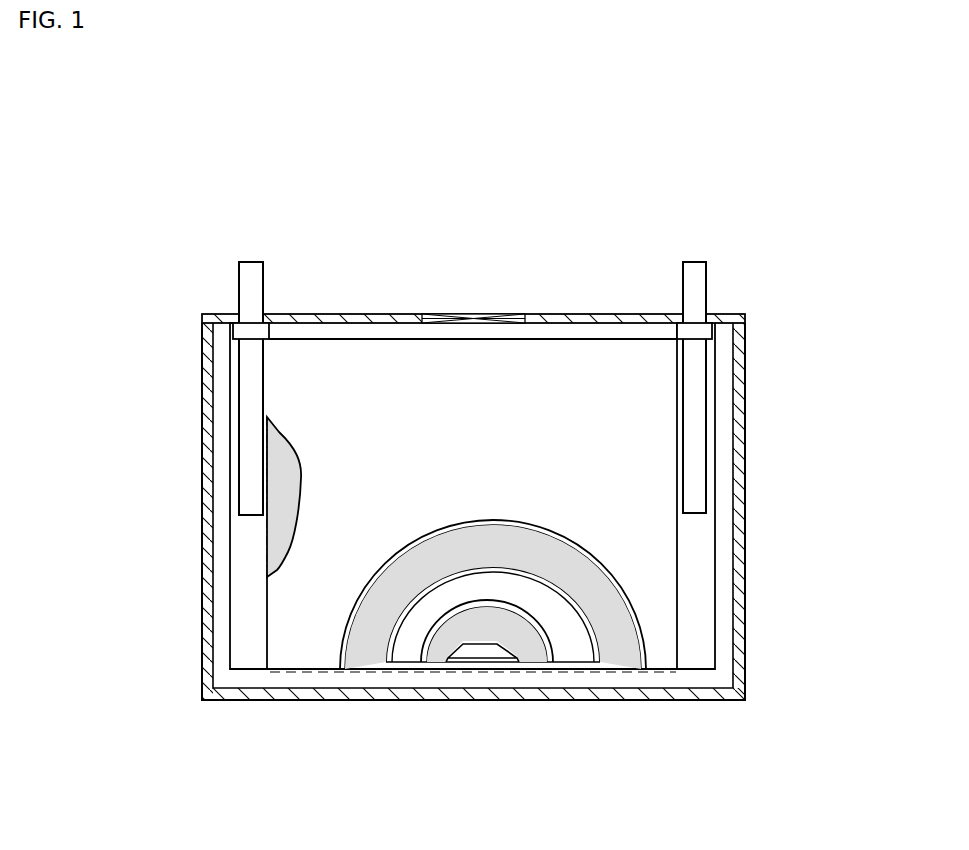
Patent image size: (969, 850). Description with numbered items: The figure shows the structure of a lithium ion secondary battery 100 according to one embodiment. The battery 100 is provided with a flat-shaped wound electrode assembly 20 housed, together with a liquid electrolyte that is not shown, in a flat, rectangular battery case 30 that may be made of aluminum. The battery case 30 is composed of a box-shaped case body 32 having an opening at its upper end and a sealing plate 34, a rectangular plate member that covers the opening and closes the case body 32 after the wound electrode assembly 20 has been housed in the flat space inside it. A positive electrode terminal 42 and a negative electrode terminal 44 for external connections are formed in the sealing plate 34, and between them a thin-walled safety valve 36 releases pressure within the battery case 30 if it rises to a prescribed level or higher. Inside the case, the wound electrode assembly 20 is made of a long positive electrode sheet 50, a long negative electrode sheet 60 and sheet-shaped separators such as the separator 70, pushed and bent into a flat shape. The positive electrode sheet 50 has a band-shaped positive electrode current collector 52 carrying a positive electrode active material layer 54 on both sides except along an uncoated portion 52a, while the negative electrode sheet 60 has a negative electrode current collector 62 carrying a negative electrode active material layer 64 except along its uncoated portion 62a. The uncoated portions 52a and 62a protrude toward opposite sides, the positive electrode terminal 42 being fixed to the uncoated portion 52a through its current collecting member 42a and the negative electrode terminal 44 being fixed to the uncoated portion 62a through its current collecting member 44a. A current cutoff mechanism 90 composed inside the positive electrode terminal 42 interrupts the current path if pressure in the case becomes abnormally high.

The lithium ion secondary battery 100 is at (476, 500).
The wound electrode assembly 20 is at (476, 530).
The battery case 30 is at (520, 460).
The case body 32 is at (747, 675).
The sealing plate 34 is at (645, 313).
The safety valve 36 is at (472, 316).
The positive electrode terminal 42 is at (251, 268).
The positive electrode current collecting member 42a is at (250, 463).
The negative electrode terminal 44 is at (694, 268).
The negative electrode current collecting member 44a is at (695, 478).
The positive electrode sheet 50 is at (360, 655).
The positive electrode current collector 52 is at (171, 503).
The uncoated portion 52a is at (245, 645).
The positive electrode active material layer 54 is at (287, 470).
The negative electrode sheet 60 is at (484, 708).
The negative electrode current collector 62 is at (776, 496).
The uncoated portion 62a is at (700, 572).
The negative electrode active material layer 64 is at (437, 653).
The separator 70 is at (303, 603).
The current cutoff mechanism 90 is at (272, 333).